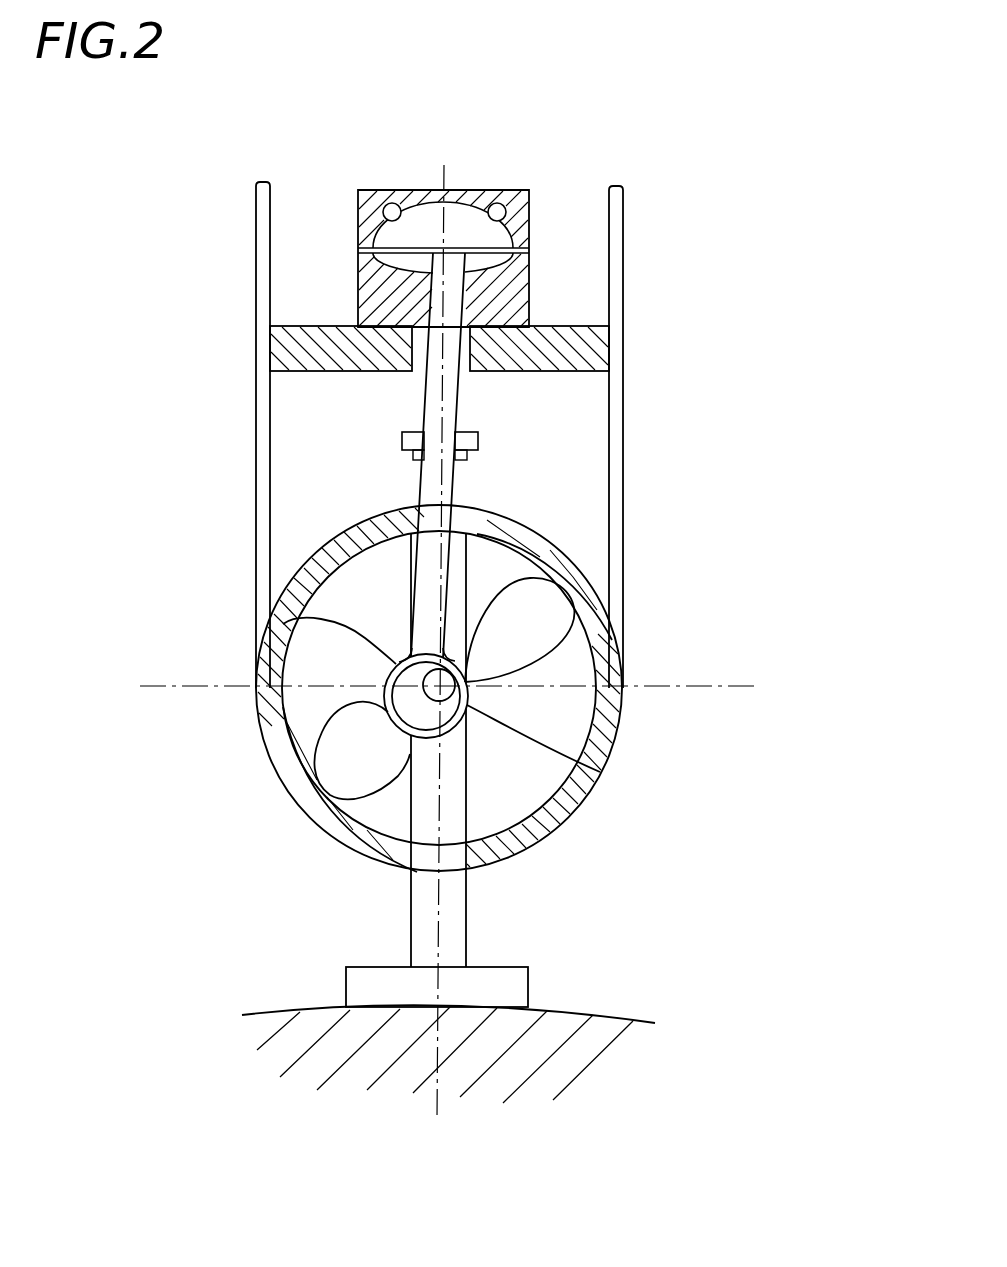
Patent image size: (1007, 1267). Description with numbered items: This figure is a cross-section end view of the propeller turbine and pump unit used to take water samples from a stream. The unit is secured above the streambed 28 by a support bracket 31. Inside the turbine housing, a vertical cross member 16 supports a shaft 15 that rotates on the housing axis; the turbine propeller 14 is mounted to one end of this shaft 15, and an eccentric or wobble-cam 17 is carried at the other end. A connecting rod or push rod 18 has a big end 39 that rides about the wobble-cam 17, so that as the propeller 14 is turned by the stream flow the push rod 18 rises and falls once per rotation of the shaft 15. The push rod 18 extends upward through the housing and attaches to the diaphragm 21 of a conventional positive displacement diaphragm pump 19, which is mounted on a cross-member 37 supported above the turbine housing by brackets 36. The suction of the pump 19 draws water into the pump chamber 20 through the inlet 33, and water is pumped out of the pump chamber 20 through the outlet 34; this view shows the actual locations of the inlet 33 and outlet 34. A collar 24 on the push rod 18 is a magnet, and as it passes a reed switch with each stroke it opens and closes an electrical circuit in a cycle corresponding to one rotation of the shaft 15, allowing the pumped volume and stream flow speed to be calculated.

The turbine propeller 14 is at (528, 638).
The shaft 15 is at (450, 698).
The vertical cross member 16 is at (470, 808).
The wobble-cam 17 is at (408, 708).
The push rod 18 is at (460, 482).
The diaphragm pump 19 is at (530, 285).
The pump chamber 20 is at (455, 208).
The diaphragm 21 is at (530, 232).
The collar 24 is at (478, 443).
The streambed 28 is at (620, 1019).
The support bracket 31 is at (466, 918).
The inlet 33 is at (497, 205).
The outlet 34 is at (381, 194).
The brackets 36 is at (257, 453).
The cross-member 37 is at (302, 324).
The big end 39 is at (281, 624).